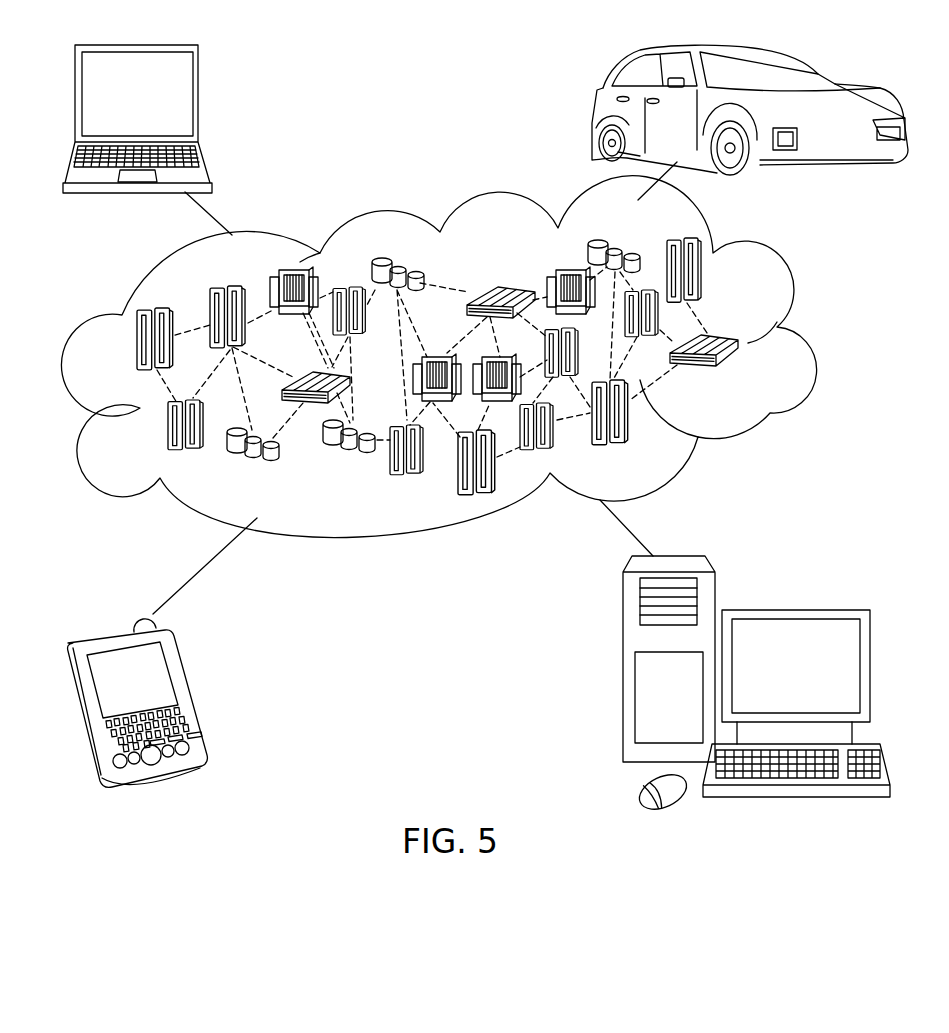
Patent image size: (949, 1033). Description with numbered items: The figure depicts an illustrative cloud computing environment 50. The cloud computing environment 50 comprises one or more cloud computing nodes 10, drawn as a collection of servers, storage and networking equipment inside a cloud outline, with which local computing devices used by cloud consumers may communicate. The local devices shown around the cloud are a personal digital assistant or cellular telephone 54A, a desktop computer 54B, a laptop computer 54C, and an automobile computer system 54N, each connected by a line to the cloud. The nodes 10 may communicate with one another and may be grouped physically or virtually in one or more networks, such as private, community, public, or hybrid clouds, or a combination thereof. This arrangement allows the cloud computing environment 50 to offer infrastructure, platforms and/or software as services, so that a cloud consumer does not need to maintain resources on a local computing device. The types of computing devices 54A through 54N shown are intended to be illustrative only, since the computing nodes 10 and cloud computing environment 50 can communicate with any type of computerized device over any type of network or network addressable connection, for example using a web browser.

The cloud computing node 10 is at (742, 375).
The cloud computing environment 50 is at (452, 357).
The personal digital assistant (PDA) or cellular telephone 54A is at (190, 692).
The desktop computer 54B is at (793, 608).
The laptop computer 54C is at (198, 102).
The automobile computer system 54N is at (593, 113).